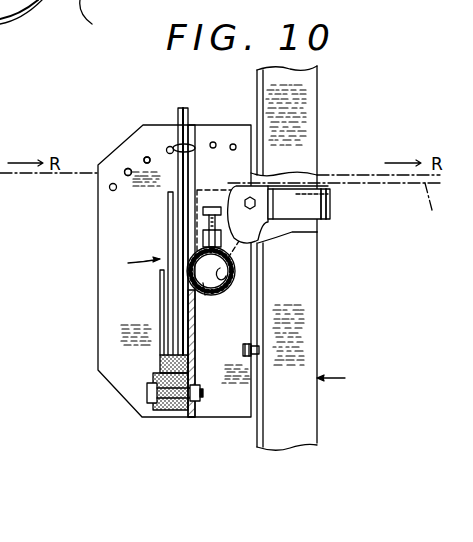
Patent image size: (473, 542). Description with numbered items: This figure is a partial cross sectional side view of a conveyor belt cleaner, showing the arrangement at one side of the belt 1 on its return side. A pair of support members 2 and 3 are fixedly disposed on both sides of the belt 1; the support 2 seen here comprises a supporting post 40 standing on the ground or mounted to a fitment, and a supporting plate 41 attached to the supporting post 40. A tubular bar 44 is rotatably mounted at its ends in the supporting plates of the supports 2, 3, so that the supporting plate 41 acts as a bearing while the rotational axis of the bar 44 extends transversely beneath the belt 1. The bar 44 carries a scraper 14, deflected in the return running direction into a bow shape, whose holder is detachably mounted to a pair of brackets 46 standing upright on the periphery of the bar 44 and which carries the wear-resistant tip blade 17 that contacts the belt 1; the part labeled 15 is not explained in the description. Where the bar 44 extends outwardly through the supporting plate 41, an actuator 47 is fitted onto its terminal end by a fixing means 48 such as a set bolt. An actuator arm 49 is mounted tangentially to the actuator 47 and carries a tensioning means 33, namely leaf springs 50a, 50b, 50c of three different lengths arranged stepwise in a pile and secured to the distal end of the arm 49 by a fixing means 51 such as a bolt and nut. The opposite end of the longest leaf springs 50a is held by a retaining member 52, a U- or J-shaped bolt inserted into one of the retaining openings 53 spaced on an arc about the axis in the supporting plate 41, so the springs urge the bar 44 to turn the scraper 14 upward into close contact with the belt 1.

The vehicle body 1 is at (433, 211).
The frame member 2 is at (339, 382).
The wheel 3 is at (93, 20).
The pin 14 is at (322, 224).
The bushing 15 is at (331, 212).
The link shaft 17 is at (330, 190).
The leaf spring assembly 33 is at (130, 264).
The support post 40 is at (315, 366).
The mounting plate 41 is at (100, 348).
The bearing 44 is at (212, 295).
The bracket 46 is at (252, 222).
The support bar 47 is at (203, 271).
The adjusting bolt 48 is at (212, 206).
The fastening bolt 49 is at (196, 356).
The first leaf 50a is at (178, 115).
The second leaf 50b is at (168, 217).
The third leaf 50c is at (160, 296).
The clamp bolt 51 is at (149, 392).
The clip 52 is at (190, 146).
The rivets 53 is at (126, 169).